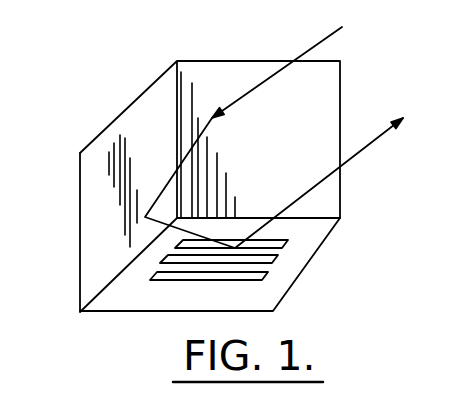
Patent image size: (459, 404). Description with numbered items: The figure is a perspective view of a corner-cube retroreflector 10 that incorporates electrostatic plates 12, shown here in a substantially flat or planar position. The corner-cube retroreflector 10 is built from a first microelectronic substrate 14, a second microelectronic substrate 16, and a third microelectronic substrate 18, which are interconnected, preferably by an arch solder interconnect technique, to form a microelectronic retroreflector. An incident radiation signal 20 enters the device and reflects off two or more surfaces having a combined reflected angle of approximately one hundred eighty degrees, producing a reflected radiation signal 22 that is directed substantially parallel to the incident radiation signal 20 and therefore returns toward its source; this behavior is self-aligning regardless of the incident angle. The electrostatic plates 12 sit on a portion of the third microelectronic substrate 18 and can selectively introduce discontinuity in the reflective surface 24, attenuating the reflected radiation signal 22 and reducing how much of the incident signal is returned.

The corner-cube retroreflector 10 is at (108, 30).
The electrostatic plates 12 is at (293, 253).
The first microelectronic substrate 14 is at (341, 98).
The second microelectronic substrate 16 is at (79, 218).
The third microelectronic substrate 18 is at (285, 294).
The incident radiation signal 20 is at (327, 33).
The reflected radiation signal 22 is at (362, 151).
The reflective surface 24 is at (174, 302).